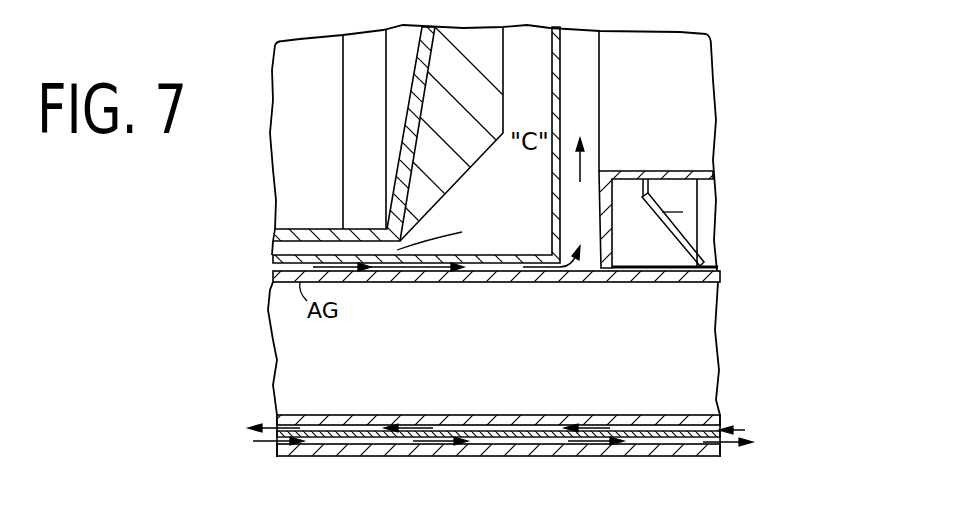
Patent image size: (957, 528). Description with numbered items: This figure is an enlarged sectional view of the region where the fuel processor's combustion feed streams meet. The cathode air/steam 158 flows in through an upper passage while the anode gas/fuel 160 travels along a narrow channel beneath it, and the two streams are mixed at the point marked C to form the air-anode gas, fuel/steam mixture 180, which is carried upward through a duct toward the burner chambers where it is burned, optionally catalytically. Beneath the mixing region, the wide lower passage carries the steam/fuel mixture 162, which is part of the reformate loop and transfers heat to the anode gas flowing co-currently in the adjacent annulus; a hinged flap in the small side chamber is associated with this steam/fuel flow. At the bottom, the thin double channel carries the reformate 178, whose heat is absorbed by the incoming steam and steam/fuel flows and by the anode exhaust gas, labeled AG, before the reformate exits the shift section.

The cathode air/steam 158 is at (303, 251).
The anode gas/fuel 160 is at (277, 266).
The steam/fuel mixture 162 is at (664, 250).
The reformate 178 is at (803, 430).
The air-anode gas, fuel/steam mixture 180 is at (688, 70).